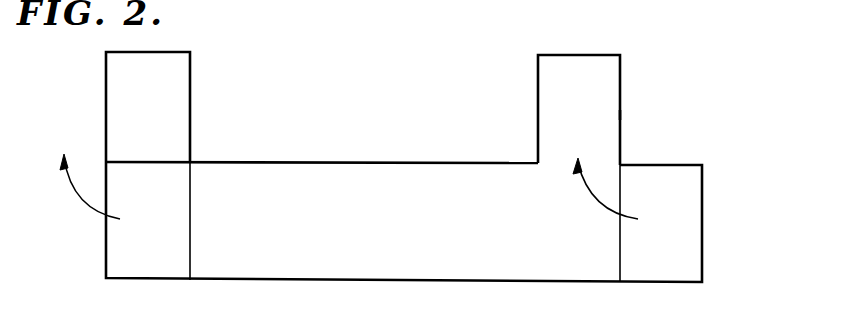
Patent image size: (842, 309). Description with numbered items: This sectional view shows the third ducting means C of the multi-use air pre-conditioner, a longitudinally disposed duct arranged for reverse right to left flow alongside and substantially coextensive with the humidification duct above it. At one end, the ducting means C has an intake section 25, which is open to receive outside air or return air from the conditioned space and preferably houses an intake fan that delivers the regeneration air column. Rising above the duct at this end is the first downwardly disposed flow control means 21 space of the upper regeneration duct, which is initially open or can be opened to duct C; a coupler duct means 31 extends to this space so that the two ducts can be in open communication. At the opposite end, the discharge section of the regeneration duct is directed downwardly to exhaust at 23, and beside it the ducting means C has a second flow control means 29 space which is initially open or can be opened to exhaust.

The third ducting means C is at (404, 222).
The first downwardly disposed flow control means space 21 is at (579, 110).
The exhaust 23 is at (148, 107).
The intake section 25 is at (621, 220).
The second flow control means space 29 is at (125, 217).
The coupler duct means 31 is at (620, 114).